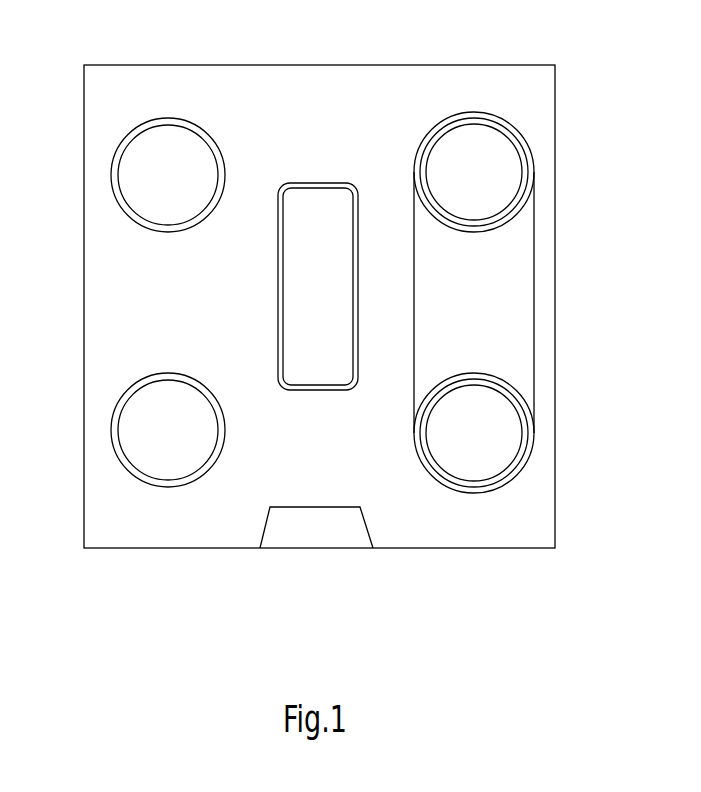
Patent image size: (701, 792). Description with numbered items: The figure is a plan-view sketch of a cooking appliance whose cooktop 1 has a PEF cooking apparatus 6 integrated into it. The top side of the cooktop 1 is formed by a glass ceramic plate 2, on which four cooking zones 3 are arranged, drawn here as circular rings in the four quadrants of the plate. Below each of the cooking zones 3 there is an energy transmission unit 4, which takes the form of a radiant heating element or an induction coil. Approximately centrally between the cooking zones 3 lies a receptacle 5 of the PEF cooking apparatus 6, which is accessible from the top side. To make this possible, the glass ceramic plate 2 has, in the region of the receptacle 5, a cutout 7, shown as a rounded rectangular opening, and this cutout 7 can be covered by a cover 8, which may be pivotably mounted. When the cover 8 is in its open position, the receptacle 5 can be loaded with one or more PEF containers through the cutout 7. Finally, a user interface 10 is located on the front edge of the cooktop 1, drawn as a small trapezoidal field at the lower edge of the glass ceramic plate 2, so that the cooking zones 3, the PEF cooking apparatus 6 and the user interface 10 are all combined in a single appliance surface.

The cooktop 1 is at (319, 276).
The glass ceramic plate 2 is at (341, 86).
The cooking zones 3 is at (113, 172).
The energy transmission unit 4 is at (115, 192).
The receptacle 5 is at (318, 292).
The PEF cooking apparatus 6 is at (312, 121).
The cutout 7 is at (318, 262).
The cover 8 is at (330, 197).
The user interface 10 is at (331, 542).